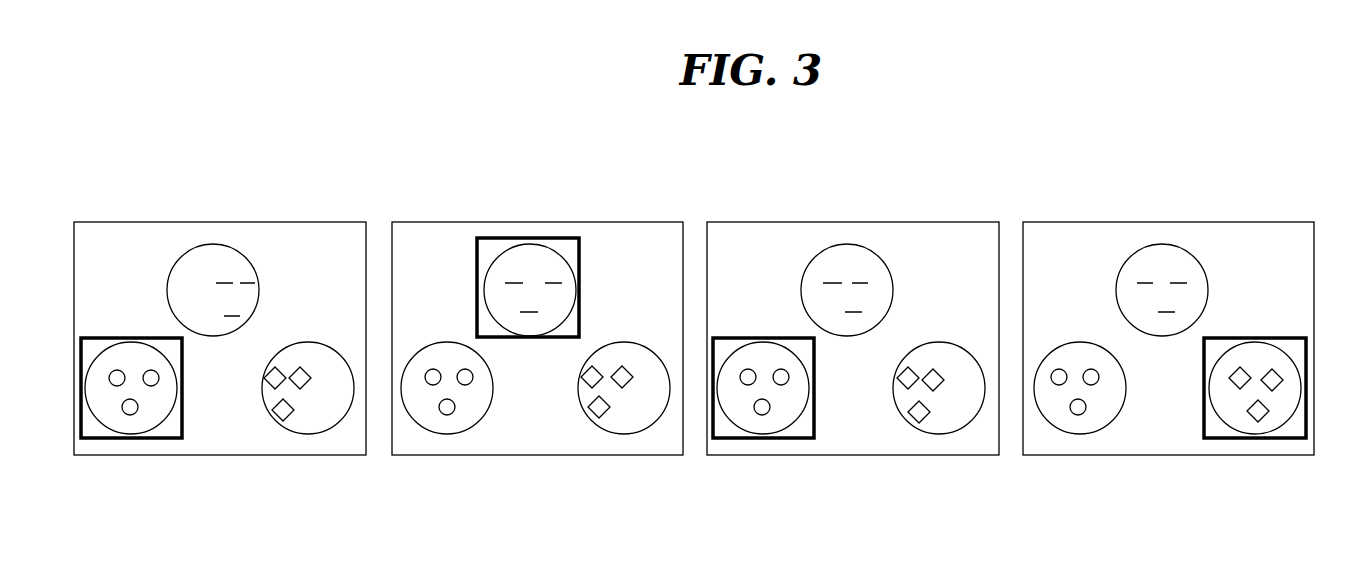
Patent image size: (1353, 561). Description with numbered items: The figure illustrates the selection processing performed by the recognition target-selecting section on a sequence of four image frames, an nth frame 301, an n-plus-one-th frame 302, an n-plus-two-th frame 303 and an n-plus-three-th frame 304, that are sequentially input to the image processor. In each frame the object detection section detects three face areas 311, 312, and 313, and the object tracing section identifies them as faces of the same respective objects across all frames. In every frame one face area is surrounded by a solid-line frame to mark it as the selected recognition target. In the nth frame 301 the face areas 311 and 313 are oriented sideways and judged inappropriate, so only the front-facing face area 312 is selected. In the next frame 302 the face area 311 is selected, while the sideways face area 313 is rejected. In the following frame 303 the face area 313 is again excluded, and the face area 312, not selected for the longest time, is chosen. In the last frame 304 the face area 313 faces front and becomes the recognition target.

The nth frame 301 is at (307, 222).
The (n+1)th frame 302 is at (621, 222).
The (n+2)th frame 303 is at (936, 222).
The (n+3)th frame 304 is at (1252, 222).
The face area 311 is at (257, 260).
The face area 312 is at (182, 378).
The face area 313 is at (308, 342).